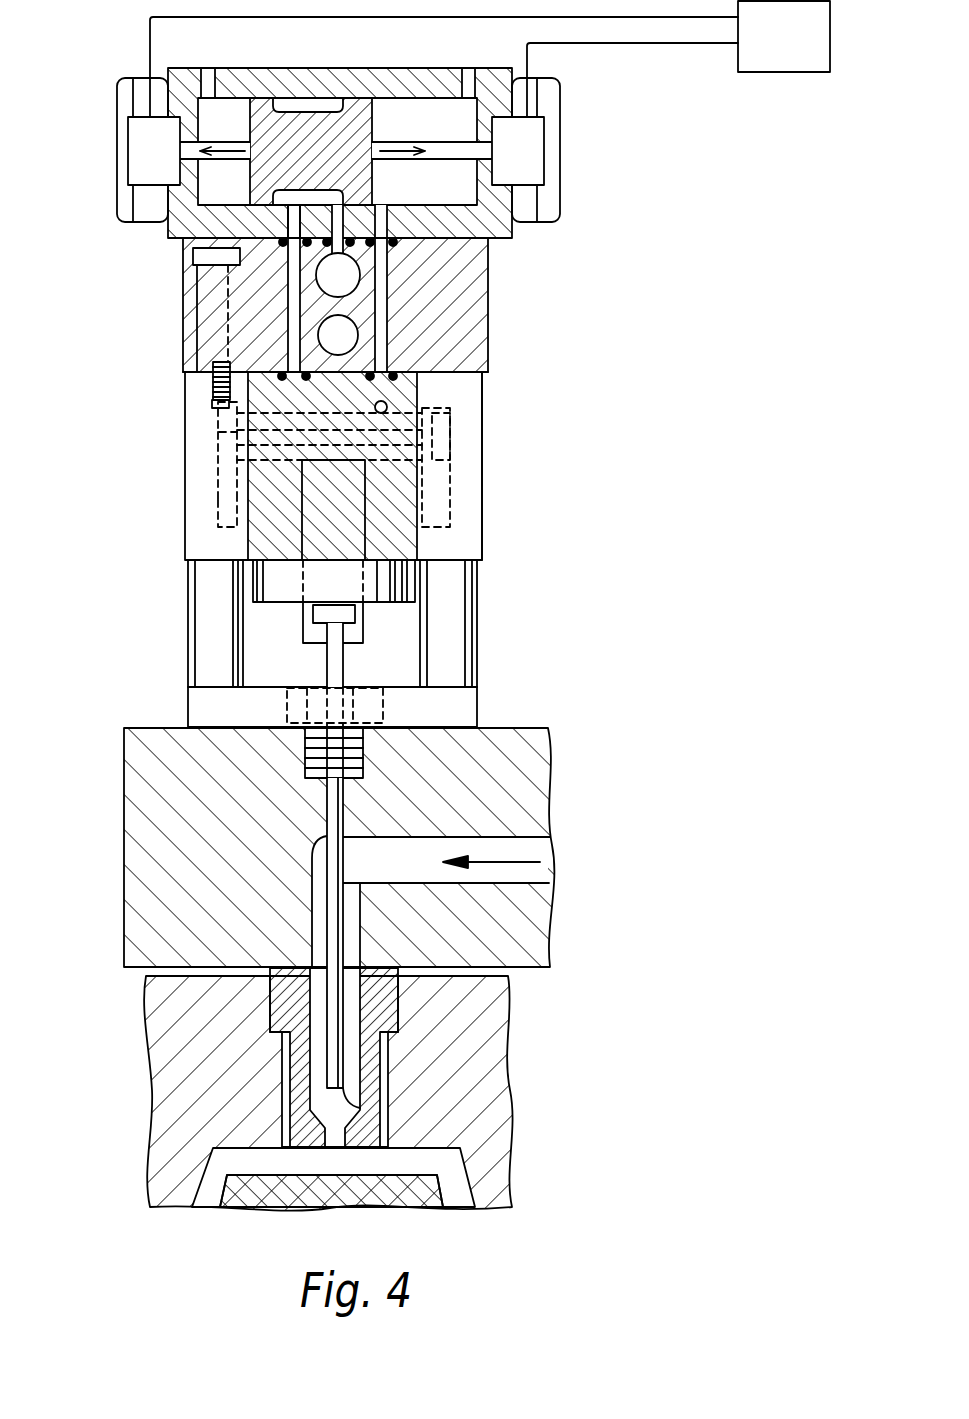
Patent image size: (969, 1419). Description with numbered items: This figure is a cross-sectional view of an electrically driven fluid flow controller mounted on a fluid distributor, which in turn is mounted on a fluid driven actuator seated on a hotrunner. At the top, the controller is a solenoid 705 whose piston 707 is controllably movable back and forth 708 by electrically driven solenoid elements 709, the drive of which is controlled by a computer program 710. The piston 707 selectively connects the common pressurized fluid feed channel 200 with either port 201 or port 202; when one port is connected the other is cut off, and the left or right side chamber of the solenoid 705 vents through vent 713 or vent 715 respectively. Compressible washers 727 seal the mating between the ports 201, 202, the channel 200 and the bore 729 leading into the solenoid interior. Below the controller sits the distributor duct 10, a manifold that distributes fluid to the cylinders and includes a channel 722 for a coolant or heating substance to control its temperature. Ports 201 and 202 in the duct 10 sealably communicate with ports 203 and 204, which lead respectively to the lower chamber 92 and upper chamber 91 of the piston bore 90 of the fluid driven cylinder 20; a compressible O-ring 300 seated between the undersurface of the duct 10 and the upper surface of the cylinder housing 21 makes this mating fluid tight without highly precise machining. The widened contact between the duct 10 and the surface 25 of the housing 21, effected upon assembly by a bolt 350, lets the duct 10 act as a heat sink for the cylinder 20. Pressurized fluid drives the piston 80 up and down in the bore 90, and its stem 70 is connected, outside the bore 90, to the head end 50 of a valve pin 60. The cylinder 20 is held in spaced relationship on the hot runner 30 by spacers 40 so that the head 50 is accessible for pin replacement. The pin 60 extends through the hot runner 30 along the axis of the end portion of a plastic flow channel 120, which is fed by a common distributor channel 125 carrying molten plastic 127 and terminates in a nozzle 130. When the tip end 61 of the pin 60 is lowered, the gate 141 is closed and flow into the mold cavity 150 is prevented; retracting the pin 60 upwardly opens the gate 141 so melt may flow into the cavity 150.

The solenoid 705 is at (103, 80).
The piston 707 is at (312, 120).
The back and forth movement 708 is at (393, 147).
The electrically driven solenoid elements 709 is at (135, 138).
The computer program 710 is at (808, 45).
The vent 713 is at (207, 72).
The vent 715 is at (467, 72).
The bore 729 is at (293, 220).
The compressible washers 727 is at (280, 241).
The port 201 is at (286, 262).
The port 202 is at (388, 262).
The common fluid feed channel 200 is at (350, 280).
The channel 722 is at (355, 335).
The distributor duct 10 is at (180, 330).
The surface 25 is at (450, 365).
The O-ring 300 is at (293, 393).
The port 204 is at (387, 406).
The bolt 350 is at (205, 386).
The port 203 is at (210, 404).
The upper chamber 91 is at (218, 425).
The piston 80 is at (218, 458).
The lower chamber 92 is at (216, 524).
The piston bore 90 is at (453, 470).
The piston stem 70 is at (452, 493).
The fluid driven cylinder 20 is at (183, 490).
The cylinder housing 21 is at (482, 523).
The spacer 40 is at (187, 602).
The head end 50 is at (317, 615).
The hot runner 30 is at (123, 753).
The valve pin 60 is at (327, 803).
The plastic flow channel 120 is at (315, 920).
The common distributor channel 125 is at (413, 855).
The molten plastic 127 is at (527, 865).
The nozzle 130 is at (271, 1008).
The tip end 61 is at (345, 1105).
The gate 141 is at (340, 1153).
The mold cavity 150 is at (207, 1198).